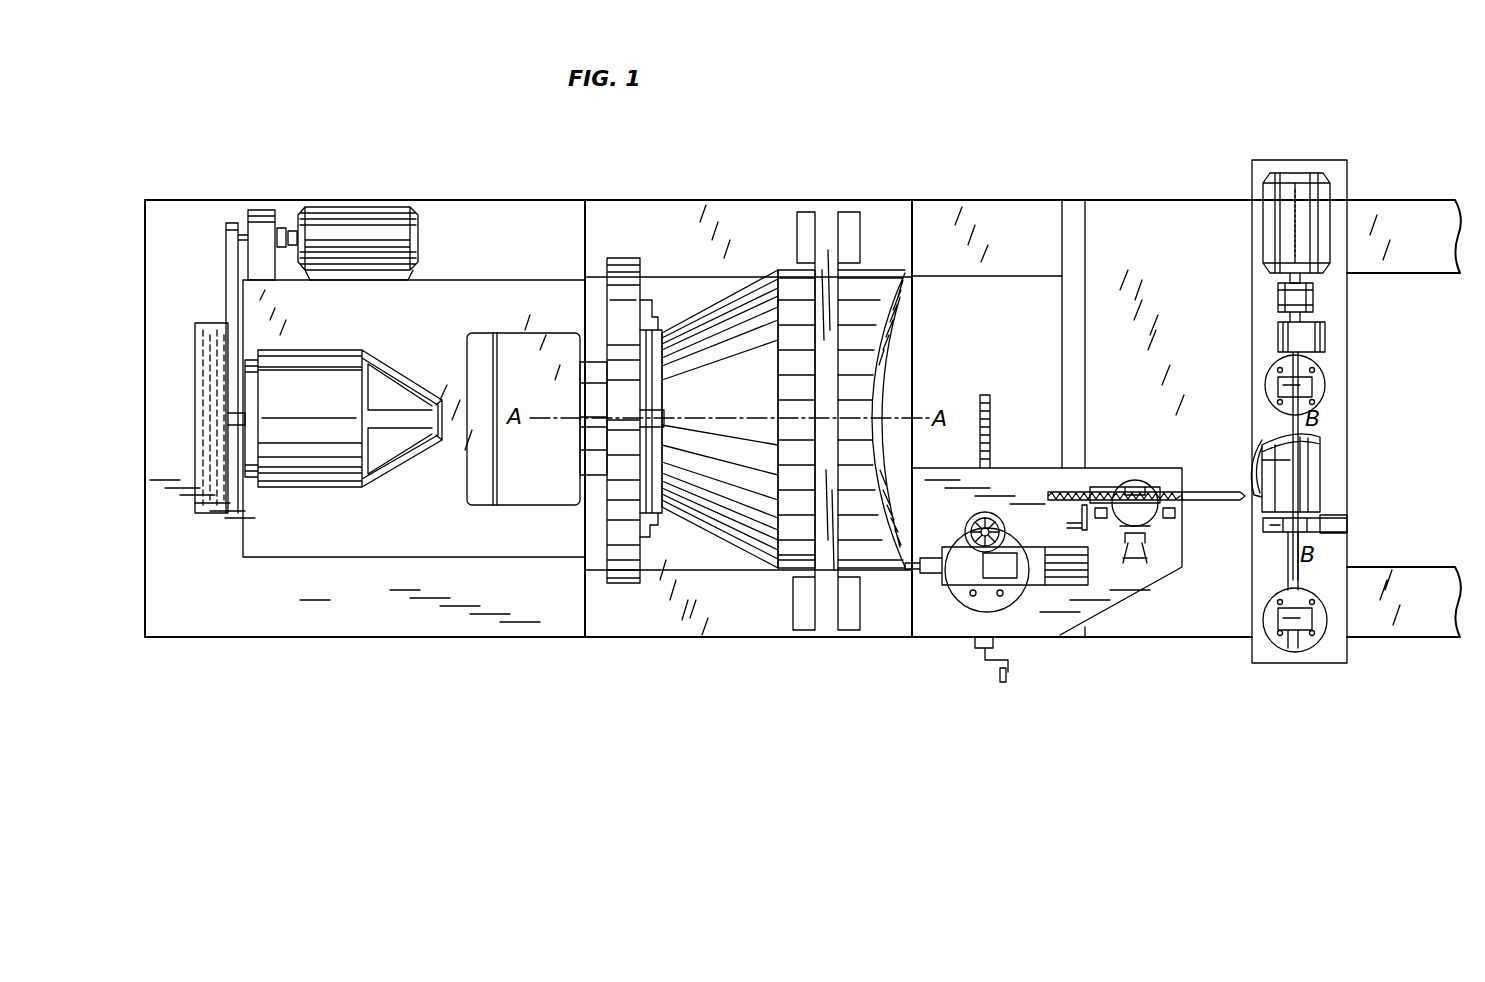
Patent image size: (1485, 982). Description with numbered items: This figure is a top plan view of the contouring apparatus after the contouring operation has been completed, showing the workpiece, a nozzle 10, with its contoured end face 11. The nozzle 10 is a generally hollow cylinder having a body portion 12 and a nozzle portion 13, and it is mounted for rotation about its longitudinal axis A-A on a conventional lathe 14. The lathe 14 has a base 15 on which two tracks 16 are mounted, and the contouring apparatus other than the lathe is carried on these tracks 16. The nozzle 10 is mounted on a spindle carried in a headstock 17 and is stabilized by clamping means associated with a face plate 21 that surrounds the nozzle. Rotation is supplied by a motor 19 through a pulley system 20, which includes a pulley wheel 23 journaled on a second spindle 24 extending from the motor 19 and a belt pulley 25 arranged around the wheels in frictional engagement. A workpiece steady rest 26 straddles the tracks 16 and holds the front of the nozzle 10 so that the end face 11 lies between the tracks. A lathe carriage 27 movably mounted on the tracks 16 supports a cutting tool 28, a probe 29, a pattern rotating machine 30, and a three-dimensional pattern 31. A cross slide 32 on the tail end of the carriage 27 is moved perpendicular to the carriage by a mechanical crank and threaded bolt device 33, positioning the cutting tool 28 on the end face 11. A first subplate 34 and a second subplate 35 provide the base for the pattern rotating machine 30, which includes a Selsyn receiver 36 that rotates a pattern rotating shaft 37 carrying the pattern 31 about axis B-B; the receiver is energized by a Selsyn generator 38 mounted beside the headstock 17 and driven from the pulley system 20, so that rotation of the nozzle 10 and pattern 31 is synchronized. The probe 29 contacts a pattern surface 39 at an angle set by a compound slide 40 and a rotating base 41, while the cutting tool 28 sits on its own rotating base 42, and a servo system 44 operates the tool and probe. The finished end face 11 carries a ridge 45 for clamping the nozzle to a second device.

The nozzle 10 is at (711, 552).
The end face 11 is at (885, 313).
The body portion 12 is at (782, 278).
The nozzle portion 13 is at (700, 325).
The lathe 14 is at (416, 672).
The base 15 is at (554, 630).
The tracks 16 is at (1022, 218).
The headstock 17 is at (497, 548).
The motor 19 is at (467, 419).
The pulley system 20 is at (183, 486).
The face plate 21 is at (622, 262).
The pulley wheel 23 is at (203, 380).
The second spindle 24 is at (248, 412).
The belt pulley 25 is at (210, 328).
The workpiece steady rest 26 is at (822, 385).
The lathe carriage 27 is at (1068, 213).
The cutting tool 28 is at (930, 548).
The probe 29 is at (1215, 500).
The pattern rotating machine 30 is at (1278, 424).
The three-dimensional pattern 31 is at (1318, 450).
The cross slide 32 is at (1016, 480).
The mechanical crank and threaded bolt device 33 is at (976, 648).
The first subplate 34 is at (1335, 318).
The second subplate 35 is at (1262, 655).
The Selsyn receiver 36 is at (1277, 190).
The pattern rotating shaft 37 is at (1287, 400).
The Selsyn generator 38 is at (345, 222).
The pattern surface 39 is at (1256, 472).
The compound slide 40 is at (1138, 552).
The rotating base 41 is at (1067, 525).
The rotating base 42 is at (960, 598).
The servo system 44 is at (1030, 575).
The ridge 45 is at (883, 372).